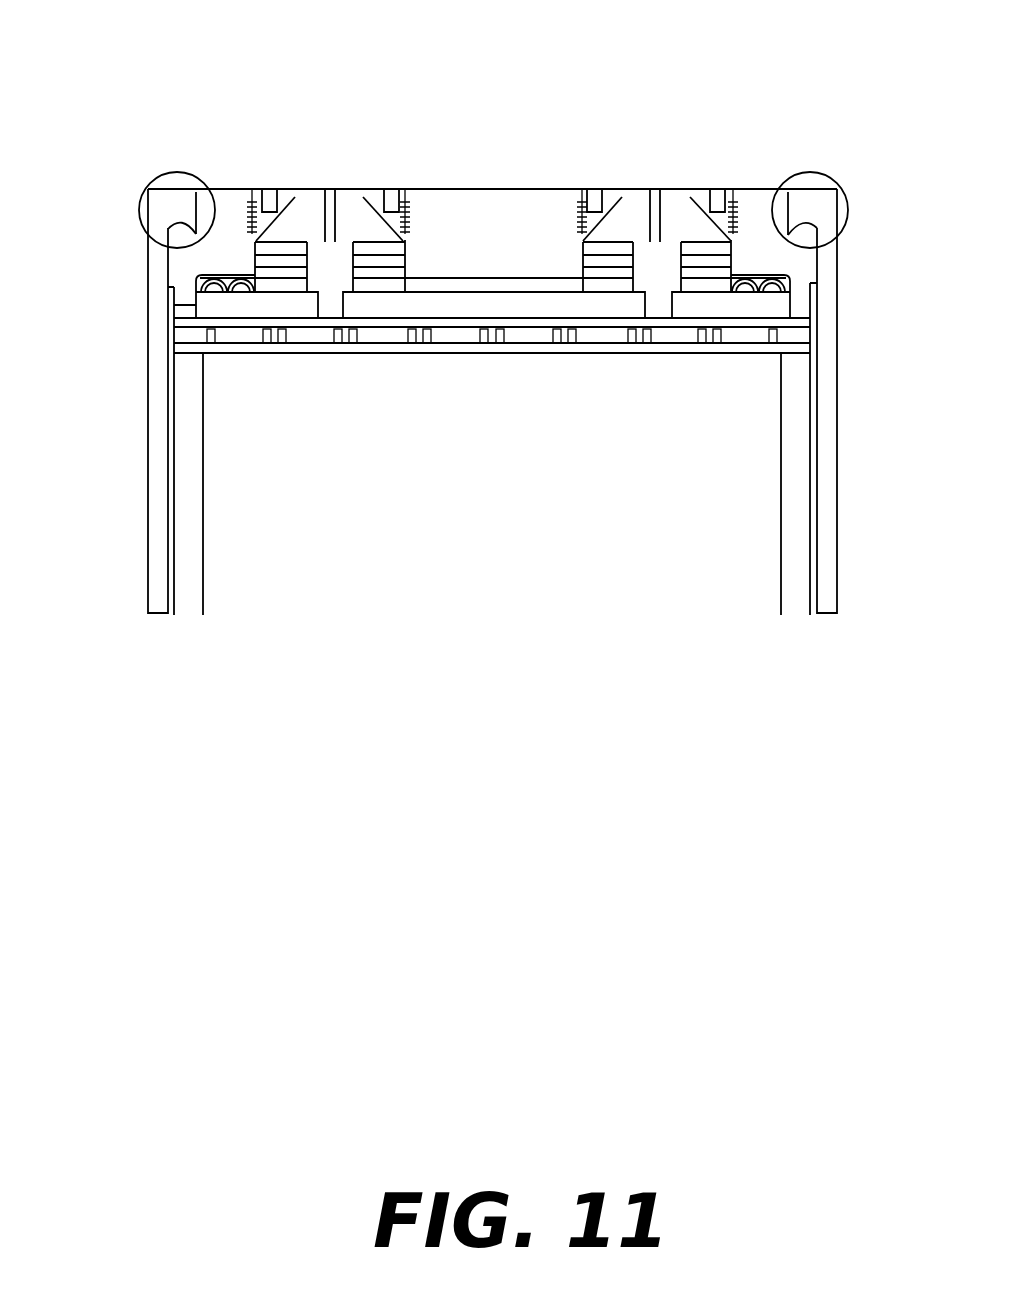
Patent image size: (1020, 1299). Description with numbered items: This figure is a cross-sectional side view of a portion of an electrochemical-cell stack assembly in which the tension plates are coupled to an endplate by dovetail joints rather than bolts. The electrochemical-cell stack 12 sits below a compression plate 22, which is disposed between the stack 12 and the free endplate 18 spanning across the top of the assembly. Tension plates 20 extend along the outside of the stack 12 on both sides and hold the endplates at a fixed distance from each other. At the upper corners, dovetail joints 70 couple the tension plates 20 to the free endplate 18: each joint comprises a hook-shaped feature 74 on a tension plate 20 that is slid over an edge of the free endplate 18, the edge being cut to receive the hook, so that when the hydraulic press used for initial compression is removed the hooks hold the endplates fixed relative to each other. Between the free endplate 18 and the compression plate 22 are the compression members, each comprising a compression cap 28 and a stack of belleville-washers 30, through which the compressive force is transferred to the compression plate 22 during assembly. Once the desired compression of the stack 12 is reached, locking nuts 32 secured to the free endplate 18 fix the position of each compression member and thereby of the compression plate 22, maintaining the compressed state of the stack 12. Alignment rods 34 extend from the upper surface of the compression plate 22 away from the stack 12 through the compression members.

The electrochemical-cell stack 12 is at (480, 494).
The free endplate 18 is at (528, 189).
The tension plate 20 is at (155, 378).
The compression plate 22 is at (765, 313).
The compression cap 28 is at (407, 238).
The stack of belleville-washers 30 is at (584, 258).
The locking nut 32 is at (268, 189).
The alignment rod 34 is at (322, 288).
The dovetail joint 70 is at (157, 175).
The hook-shaped feature 74 is at (191, 226).